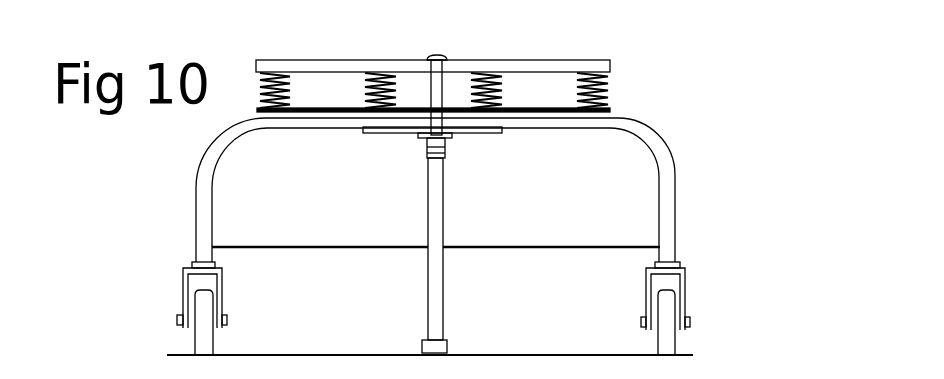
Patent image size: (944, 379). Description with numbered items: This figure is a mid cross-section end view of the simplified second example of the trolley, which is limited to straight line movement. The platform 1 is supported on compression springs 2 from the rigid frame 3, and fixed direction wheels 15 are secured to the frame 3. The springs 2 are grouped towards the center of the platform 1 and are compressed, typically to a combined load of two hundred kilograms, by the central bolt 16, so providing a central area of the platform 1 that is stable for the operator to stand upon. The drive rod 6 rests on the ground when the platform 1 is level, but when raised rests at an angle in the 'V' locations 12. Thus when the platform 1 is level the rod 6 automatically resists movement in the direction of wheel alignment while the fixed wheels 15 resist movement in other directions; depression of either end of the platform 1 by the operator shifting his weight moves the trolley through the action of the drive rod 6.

The platform 1 is at (610, 72).
The compression springs 2 is at (606, 100).
The rigid frame 3 is at (675, 202).
The drive rod 6 is at (425, 287).
The 'V' locations 12 is at (487, 247).
The fixed direction wheels 15 is at (685, 307).
The central bolt 16 is at (428, 92).